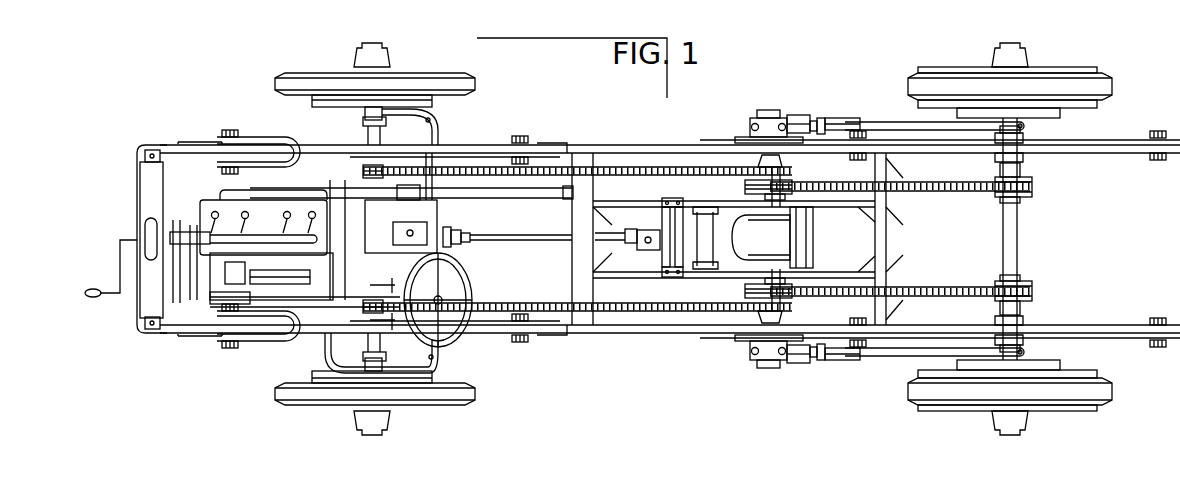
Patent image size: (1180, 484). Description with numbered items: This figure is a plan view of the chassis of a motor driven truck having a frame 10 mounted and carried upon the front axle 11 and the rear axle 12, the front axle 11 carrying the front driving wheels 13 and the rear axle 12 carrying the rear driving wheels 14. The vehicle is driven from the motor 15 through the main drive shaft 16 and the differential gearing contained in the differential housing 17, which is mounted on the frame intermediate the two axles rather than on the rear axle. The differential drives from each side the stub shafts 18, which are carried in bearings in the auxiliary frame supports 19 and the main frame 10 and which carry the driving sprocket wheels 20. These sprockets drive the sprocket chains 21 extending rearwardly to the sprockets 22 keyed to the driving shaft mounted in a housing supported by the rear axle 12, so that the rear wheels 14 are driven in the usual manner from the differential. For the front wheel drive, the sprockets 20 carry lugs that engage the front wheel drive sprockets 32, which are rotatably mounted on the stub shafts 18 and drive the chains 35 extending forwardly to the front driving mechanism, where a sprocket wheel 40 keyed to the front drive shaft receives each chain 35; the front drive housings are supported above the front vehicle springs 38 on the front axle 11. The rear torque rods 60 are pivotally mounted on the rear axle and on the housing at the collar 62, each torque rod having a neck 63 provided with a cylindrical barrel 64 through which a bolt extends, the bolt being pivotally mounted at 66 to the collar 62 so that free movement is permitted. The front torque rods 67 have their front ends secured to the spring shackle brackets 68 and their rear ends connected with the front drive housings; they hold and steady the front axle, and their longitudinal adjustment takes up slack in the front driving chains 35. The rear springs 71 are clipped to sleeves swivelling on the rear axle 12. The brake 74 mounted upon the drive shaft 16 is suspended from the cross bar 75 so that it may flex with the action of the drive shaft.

The frame 10 is at (632, 147).
The front axle 11 is at (370, 134).
The rear axle 12 is at (1013, 238).
The front driving wheels 13 is at (278, 83).
The rear driving wheels 14 is at (1105, 90).
The motor 15 is at (220, 210).
The main drive shaft 16 is at (511, 238).
The differential housing 17 is at (806, 242).
The stub shafts 18 is at (770, 196).
The auxiliary frame supports 19 is at (693, 200).
The driving sprocket wheels 20 is at (793, 187).
The sprocket chains 21 is at (952, 192).
The sprockets 22 is at (1022, 192).
The front wheel drive sprockets 32 is at (784, 310).
The chains 35 is at (608, 167).
The front vehicle springs 38 is at (468, 158).
The sprocket wheel 40 is at (370, 168).
The torque rods 60 is at (893, 128).
The collar 62 is at (774, 126).
The neck 63 is at (820, 122).
The cylindrical barrel 64 is at (850, 124).
The pivot 66 is at (788, 118).
The front torque rods 67 is at (262, 137).
The spring shackle brackets 68 is at (200, 142).
The rear springs 71 is at (1110, 142).
The brake 74 is at (664, 222).
The cross bar 75 is at (668, 200).